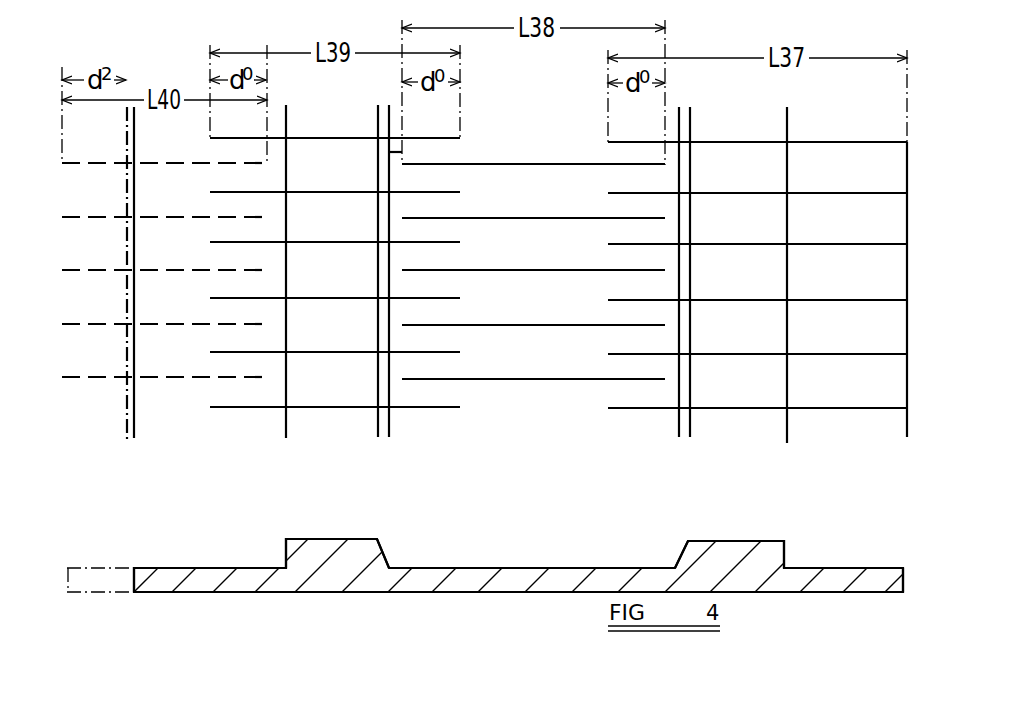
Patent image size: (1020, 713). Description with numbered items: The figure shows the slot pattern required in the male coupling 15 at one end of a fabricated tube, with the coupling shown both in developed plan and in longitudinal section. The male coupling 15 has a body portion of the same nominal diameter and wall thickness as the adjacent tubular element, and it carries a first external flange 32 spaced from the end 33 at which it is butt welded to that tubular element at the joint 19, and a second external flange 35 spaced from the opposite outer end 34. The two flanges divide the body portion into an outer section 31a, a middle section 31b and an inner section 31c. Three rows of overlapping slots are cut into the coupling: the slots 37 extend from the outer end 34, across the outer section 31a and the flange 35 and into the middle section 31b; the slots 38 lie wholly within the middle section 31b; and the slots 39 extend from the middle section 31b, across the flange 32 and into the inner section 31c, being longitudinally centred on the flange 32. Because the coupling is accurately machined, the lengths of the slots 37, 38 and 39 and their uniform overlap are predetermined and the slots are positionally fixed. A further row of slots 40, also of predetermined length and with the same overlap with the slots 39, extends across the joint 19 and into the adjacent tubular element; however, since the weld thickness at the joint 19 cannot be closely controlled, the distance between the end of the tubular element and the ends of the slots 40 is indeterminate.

The male coupling 15 is at (481, 595).
The joint 19 is at (127, 441).
The outer section 31a is at (830, 568).
The middle section 31b is at (535, 568).
The inner section 31c is at (236, 568).
The first external flange 32 is at (335, 539).
The end 33 is at (135, 398).
The outer end 34 is at (905, 432).
The second external flange 35 is at (730, 541).
The slots 37 is at (742, 140).
The slots 38 is at (519, 162).
The slots 39 is at (348, 136).
The slots 40 is at (160, 163).